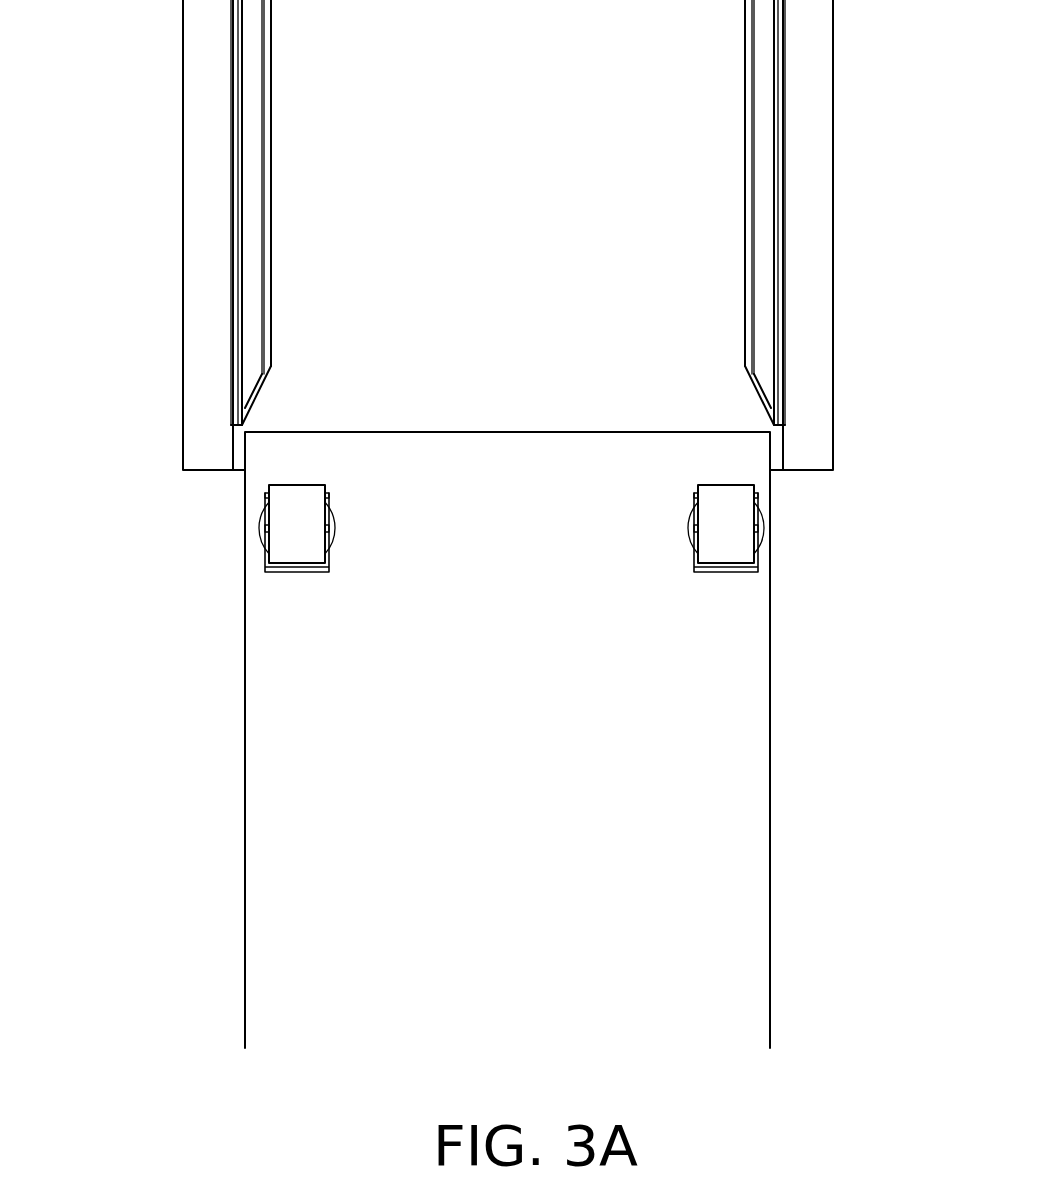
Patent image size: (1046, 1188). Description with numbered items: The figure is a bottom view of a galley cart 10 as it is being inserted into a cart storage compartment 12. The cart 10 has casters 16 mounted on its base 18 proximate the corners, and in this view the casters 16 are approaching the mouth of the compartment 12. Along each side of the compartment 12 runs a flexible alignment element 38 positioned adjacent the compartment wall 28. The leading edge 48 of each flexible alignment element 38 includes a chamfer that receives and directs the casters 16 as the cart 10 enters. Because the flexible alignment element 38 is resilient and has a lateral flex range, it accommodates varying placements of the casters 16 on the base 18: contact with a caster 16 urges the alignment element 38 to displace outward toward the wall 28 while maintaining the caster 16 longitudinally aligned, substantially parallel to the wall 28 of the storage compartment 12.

The galley cart 10 is at (770, 758).
The cart storage compartment 12 is at (500, 74).
The caster 16 is at (304, 527).
The base 18 is at (510, 751).
The wall 28 is at (231, 330).
The flexible alignment element 38 is at (252, 263).
The leading edge 48 is at (260, 397).